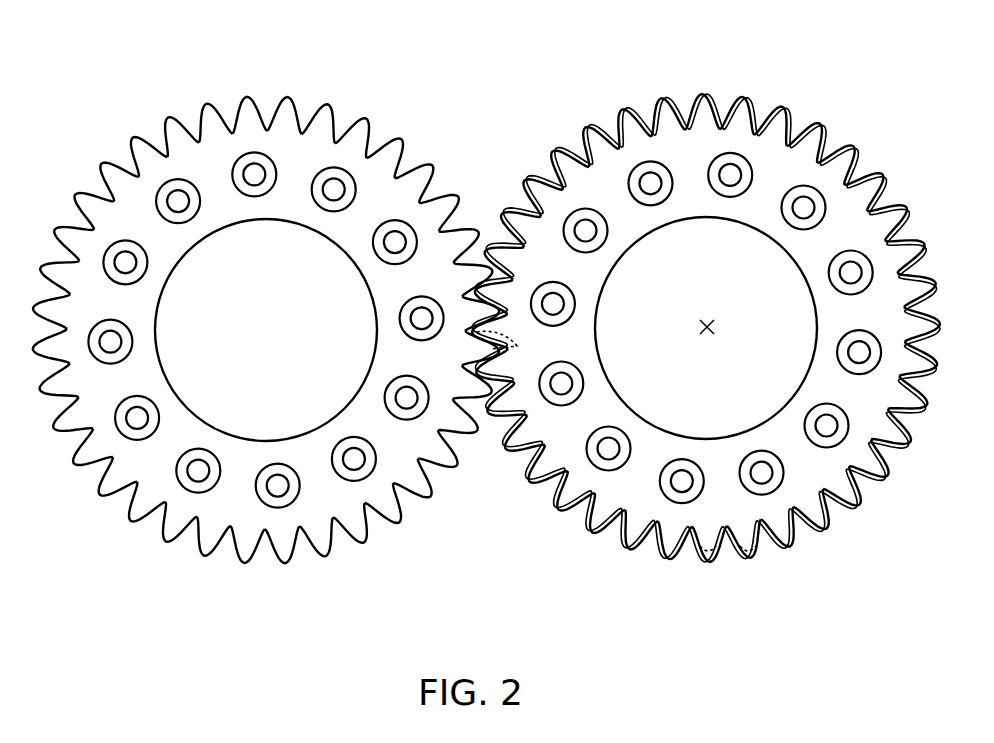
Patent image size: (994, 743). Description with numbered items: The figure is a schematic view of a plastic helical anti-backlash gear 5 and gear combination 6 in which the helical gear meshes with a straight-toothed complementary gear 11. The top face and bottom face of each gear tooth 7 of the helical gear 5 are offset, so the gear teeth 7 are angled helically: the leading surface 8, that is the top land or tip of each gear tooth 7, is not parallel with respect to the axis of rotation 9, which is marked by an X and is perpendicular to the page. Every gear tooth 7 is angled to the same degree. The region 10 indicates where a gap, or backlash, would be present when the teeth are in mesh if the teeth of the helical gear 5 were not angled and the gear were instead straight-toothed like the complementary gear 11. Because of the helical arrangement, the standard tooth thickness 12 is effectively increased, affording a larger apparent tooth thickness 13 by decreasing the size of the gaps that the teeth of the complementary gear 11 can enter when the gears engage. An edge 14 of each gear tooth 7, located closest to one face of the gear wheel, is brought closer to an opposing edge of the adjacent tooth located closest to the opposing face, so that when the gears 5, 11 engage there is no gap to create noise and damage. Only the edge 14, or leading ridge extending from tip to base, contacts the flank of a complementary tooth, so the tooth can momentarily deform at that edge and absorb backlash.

The plastic helical anti-backlash gear 5 is at (800, 157).
The gear combination 6 is at (265, 321).
The gear tooth 7 is at (663, 118).
The leading surface 8 is at (747, 102).
The axis of rotation 9 is at (713, 327).
The region 10 is at (470, 340).
The complementary gear 11 is at (150, 188).
The standard tooth thickness 12 is at (703, 557).
The apparent tooth thickness 13 is at (750, 554).
The edge 14 is at (520, 458).